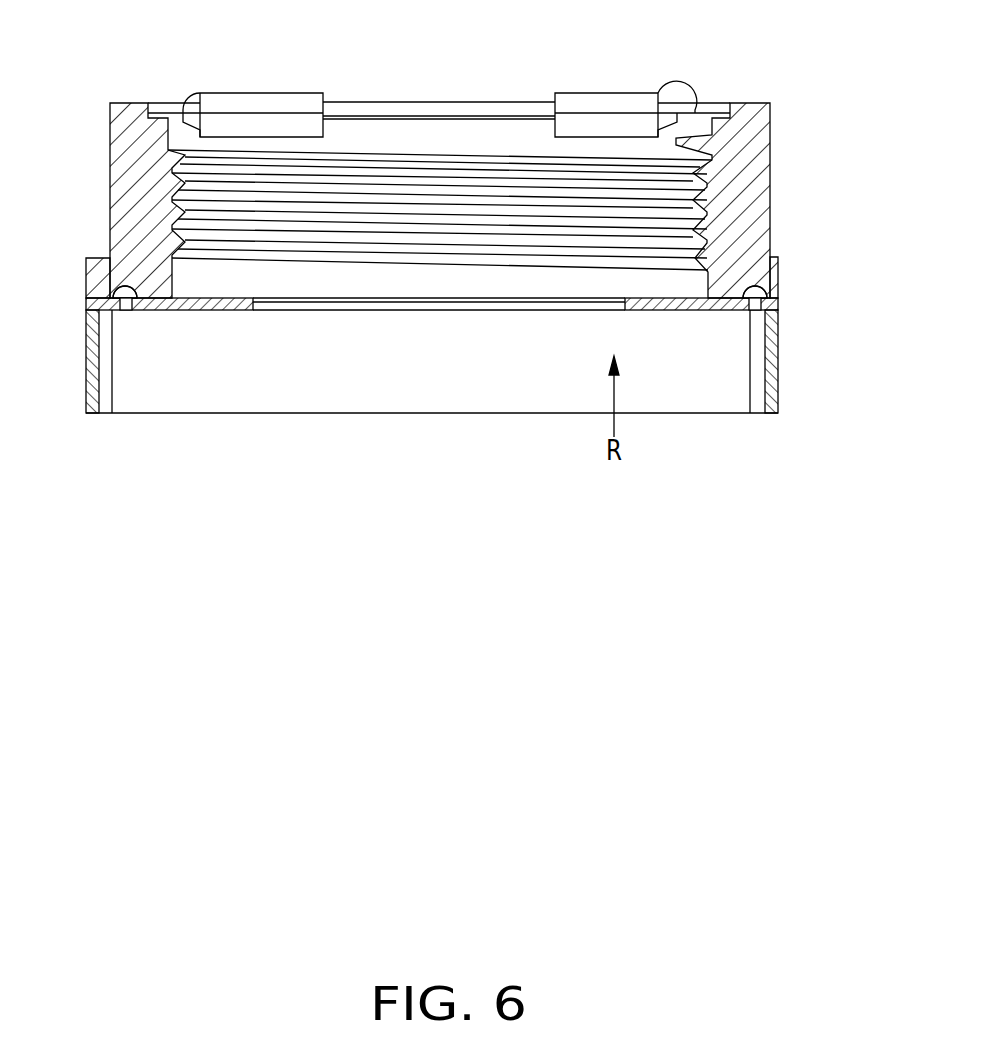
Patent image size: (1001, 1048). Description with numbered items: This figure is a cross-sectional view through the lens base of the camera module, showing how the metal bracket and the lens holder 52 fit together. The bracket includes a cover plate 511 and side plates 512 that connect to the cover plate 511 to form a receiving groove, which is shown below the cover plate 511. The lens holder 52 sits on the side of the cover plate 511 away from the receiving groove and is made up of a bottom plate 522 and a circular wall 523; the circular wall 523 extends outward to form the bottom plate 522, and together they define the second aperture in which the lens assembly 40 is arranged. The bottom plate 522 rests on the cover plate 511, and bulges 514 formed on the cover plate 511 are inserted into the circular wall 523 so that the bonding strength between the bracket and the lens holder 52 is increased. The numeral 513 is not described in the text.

The lens assembly 40 is at (437, 110).
The lens holder 52 is at (500, 200).
The circular wall 523 is at (748, 137).
The bottom plate 522 is at (770, 273).
The cover plate 511 is at (475, 310).
The side plates 512 is at (777, 387).
The housing top plate 513 is at (328, 307).
The bulges 514 is at (118, 282).